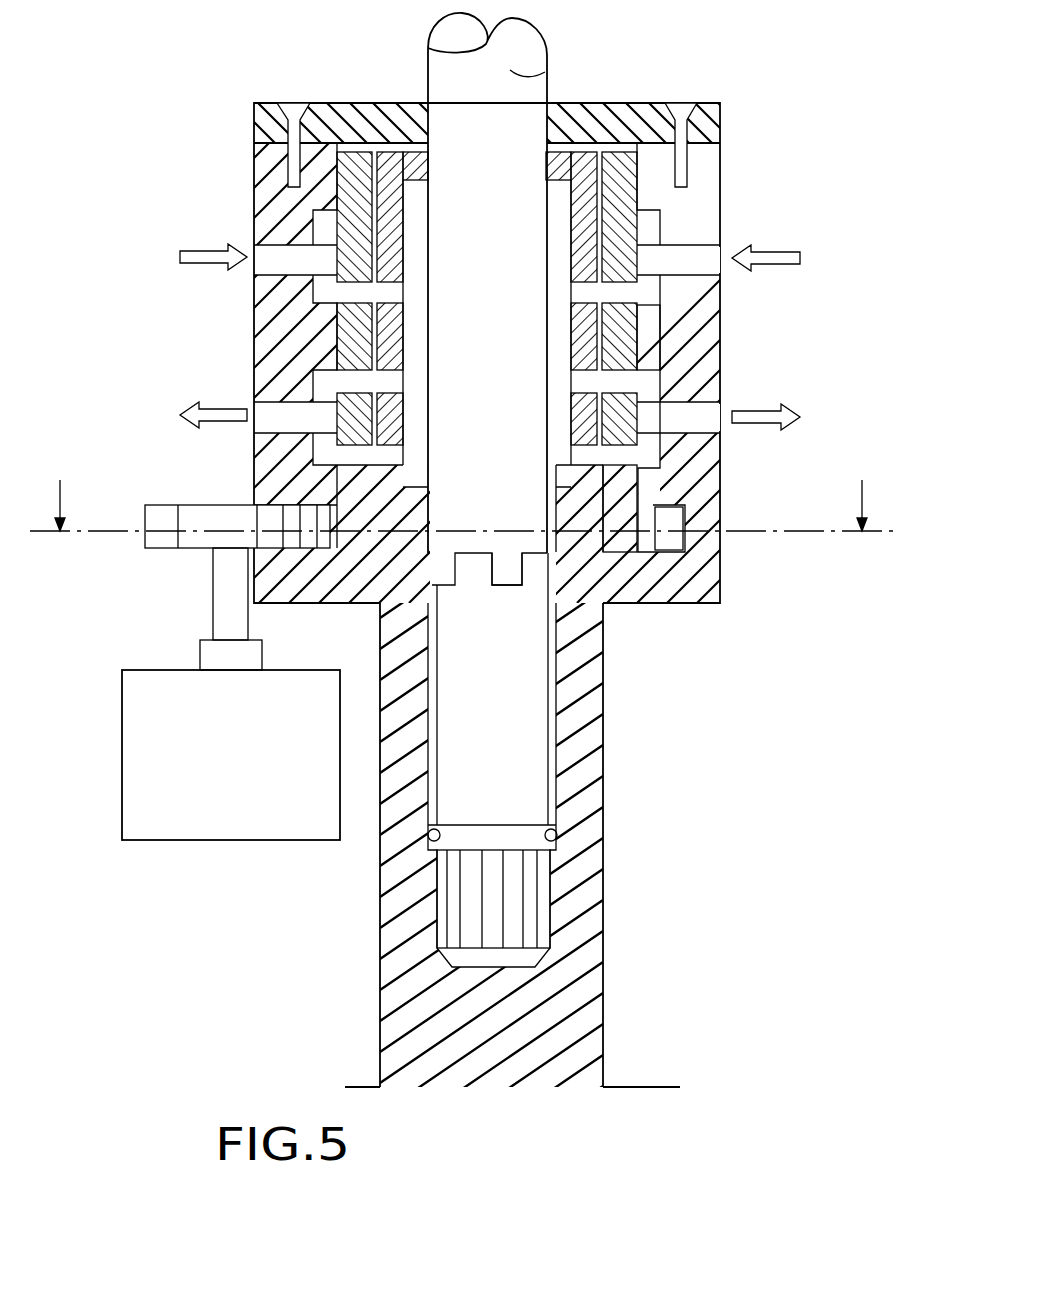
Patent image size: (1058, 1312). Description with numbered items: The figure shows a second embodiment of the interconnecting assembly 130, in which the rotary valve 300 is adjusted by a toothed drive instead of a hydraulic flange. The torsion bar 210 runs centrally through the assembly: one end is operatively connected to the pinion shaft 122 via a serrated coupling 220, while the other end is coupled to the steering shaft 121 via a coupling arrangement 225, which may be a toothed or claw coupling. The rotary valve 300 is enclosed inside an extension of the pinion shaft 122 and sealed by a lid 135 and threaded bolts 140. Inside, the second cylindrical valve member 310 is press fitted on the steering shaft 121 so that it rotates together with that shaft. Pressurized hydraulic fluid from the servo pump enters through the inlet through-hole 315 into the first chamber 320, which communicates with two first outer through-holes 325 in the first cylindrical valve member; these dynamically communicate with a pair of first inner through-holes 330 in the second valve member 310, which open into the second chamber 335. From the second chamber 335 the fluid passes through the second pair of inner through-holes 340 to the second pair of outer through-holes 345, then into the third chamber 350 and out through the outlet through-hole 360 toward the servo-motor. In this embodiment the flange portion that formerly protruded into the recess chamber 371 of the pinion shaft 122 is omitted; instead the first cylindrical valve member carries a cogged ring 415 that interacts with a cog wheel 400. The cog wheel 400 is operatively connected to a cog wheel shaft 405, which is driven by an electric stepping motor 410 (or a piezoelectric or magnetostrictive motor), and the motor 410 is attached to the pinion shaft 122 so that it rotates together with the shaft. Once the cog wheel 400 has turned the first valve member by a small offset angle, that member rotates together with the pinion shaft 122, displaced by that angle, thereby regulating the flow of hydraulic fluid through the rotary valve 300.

The interconnecting assembly 130 is at (805, 92).
The lid 135 is at (375, 110).
The threaded bolts 140 is at (300, 108).
The steering shaft 121 is at (545, 72).
The pinion shaft 122 is at (560, 1047).
The second cylindrical valve member 310 is at (548, 168).
The rotary valve 300 is at (565, 340).
The second chamber 335 is at (580, 222).
The first inner through-holes 330 is at (585, 298).
The second pair of inner through-holes 340 is at (585, 460).
The first outer through-holes 325 is at (622, 222).
The first chamber 320 is at (640, 293).
The second pair of outer through-holes 345 is at (645, 378).
The third chamber 350 is at (648, 458).
The inlet through-hole 315 is at (712, 262).
The outlet through-hole 360 is at (705, 430).
The recess chamber 371 is at (612, 555).
The cogged ring 415 is at (665, 548).
The cog wheel 400 is at (207, 505).
The cog wheel shaft 405 is at (222, 603).
The electric stepping motor 410 is at (152, 815).
The torsion bar 210 is at (515, 740).
The coupling arrangement 225 is at (500, 574).
The serrated coupling 220 is at (512, 898).